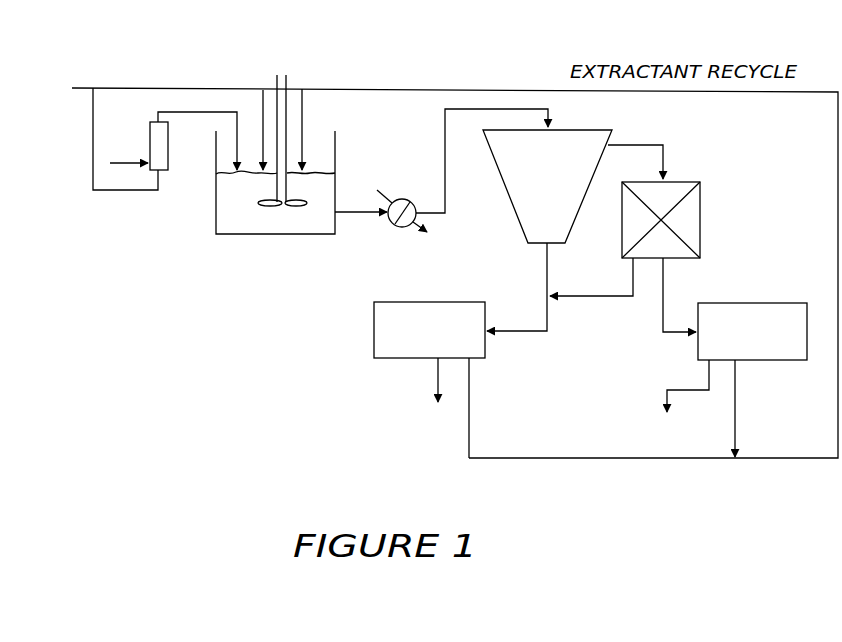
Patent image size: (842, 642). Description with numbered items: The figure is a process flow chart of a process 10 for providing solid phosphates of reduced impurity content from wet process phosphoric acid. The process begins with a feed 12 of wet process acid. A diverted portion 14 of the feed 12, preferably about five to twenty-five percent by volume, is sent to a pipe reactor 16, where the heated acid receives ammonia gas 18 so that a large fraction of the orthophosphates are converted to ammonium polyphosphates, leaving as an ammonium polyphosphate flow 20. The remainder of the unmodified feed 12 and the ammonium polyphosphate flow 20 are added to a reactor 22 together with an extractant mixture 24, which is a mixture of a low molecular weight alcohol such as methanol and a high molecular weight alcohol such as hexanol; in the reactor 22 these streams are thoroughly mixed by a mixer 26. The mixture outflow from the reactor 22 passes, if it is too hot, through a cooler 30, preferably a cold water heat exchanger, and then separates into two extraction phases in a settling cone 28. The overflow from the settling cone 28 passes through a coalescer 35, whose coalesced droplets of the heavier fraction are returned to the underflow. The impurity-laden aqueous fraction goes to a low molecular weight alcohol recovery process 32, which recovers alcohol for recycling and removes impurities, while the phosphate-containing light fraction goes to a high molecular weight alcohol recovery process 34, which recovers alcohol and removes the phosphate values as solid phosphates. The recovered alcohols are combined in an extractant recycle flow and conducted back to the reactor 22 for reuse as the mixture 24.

The process 10 is at (182, 36).
The feed 12 is at (82, 88).
The diverted portion 14 is at (93, 146).
The pipe reactor 16 is at (168, 150).
The ammonia gas 18 is at (147, 163).
The ammonium polyphosphate flow 20 is at (235, 112).
The reactor 22 is at (216, 218).
The extractant mixture 24 is at (302, 112).
The mixer 26 is at (297, 207).
The settling cone 28 is at (523, 235).
The cooler 30 is at (413, 226).
The low molecular weight alcohol recovery process 32 is at (462, 302).
The high molecular weight alcohol recovery process 34 is at (698, 357).
The coalescer 35 is at (699, 182).